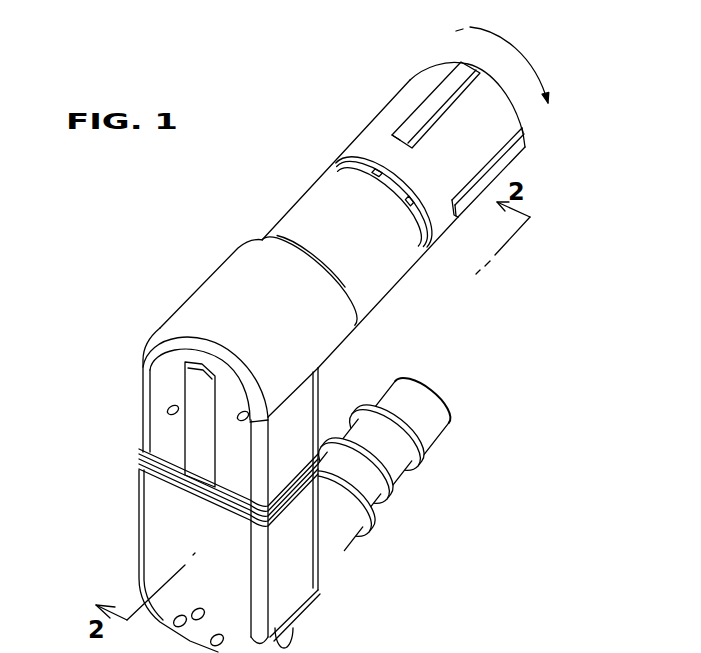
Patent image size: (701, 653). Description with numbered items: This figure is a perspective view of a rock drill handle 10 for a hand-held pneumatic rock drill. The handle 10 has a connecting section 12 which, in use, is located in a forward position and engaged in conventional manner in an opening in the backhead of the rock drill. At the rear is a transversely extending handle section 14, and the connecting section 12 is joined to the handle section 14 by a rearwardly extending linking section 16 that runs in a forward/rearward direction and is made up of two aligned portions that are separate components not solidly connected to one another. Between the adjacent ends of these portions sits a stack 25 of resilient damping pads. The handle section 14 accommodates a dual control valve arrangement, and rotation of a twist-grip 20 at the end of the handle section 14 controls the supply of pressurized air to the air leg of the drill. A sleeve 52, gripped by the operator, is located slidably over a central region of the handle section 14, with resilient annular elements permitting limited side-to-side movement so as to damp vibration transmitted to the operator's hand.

The handle 10 is at (427, 353).
The connecting section 12 is at (372, 522).
The handle section 14 is at (275, 217).
The linking section 16 is at (133, 545).
The twist-grip 20 is at (401, 104).
The stack of resilient damping pads 25 is at (135, 457).
The sleeve 52 is at (319, 185).